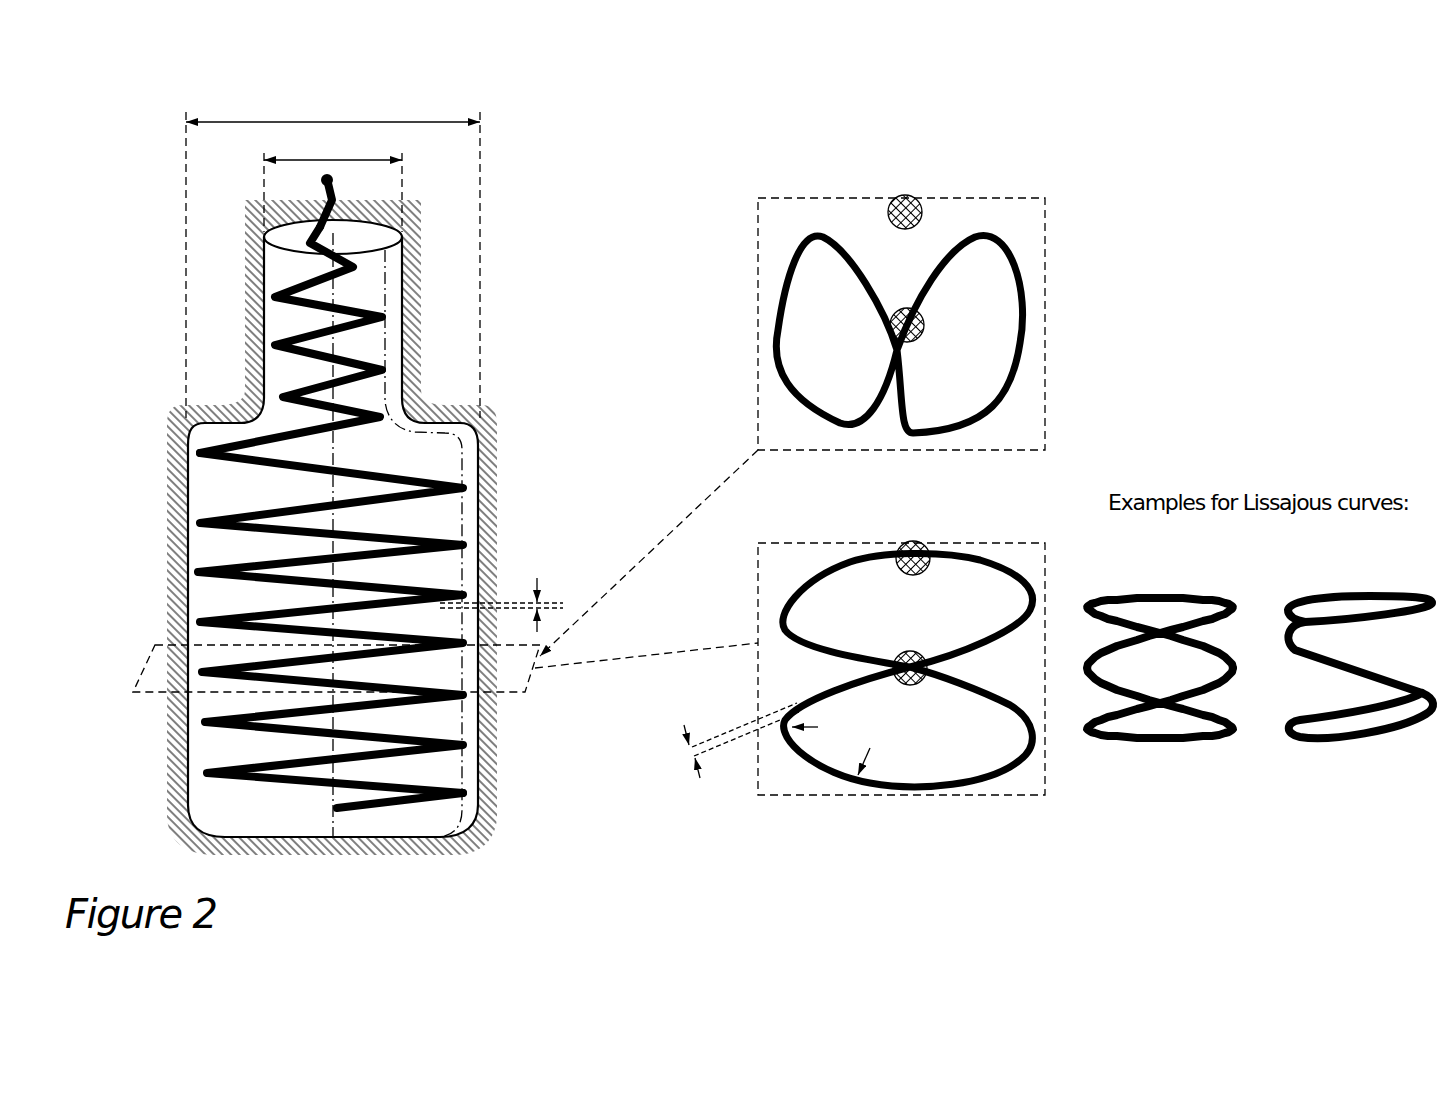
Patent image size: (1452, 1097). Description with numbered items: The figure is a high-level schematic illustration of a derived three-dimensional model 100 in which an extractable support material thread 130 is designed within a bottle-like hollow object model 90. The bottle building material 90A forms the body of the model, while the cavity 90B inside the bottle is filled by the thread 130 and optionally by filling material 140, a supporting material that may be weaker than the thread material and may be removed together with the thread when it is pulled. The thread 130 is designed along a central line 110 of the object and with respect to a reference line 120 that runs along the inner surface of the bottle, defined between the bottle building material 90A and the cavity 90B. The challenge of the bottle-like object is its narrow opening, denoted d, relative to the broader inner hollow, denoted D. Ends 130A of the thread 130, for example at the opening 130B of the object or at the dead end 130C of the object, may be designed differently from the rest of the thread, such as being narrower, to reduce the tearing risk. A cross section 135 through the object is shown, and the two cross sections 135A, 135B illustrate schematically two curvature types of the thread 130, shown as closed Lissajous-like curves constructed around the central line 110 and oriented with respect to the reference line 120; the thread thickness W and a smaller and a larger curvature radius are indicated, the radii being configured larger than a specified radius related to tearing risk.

The derived 3D model 100 is at (110, 87).
The hollow 3D object model 90 is at (112, 305).
The bottle building material 90A is at (256, 375).
The cavity 90B is at (274, 359).
The central line 110 is at (345, 455).
The reference line 120 is at (463, 466).
The thread 130 is at (196, 526).
The end of thread 130A is at (233, 204).
The opening 130B is at (365, 233).
The dead end 130C is at (317, 880).
The cross section 135 is at (504, 694).
The cross section 135A is at (803, 197).
The cross section 135B is at (803, 543).
The filling material 140 is at (972, 358).